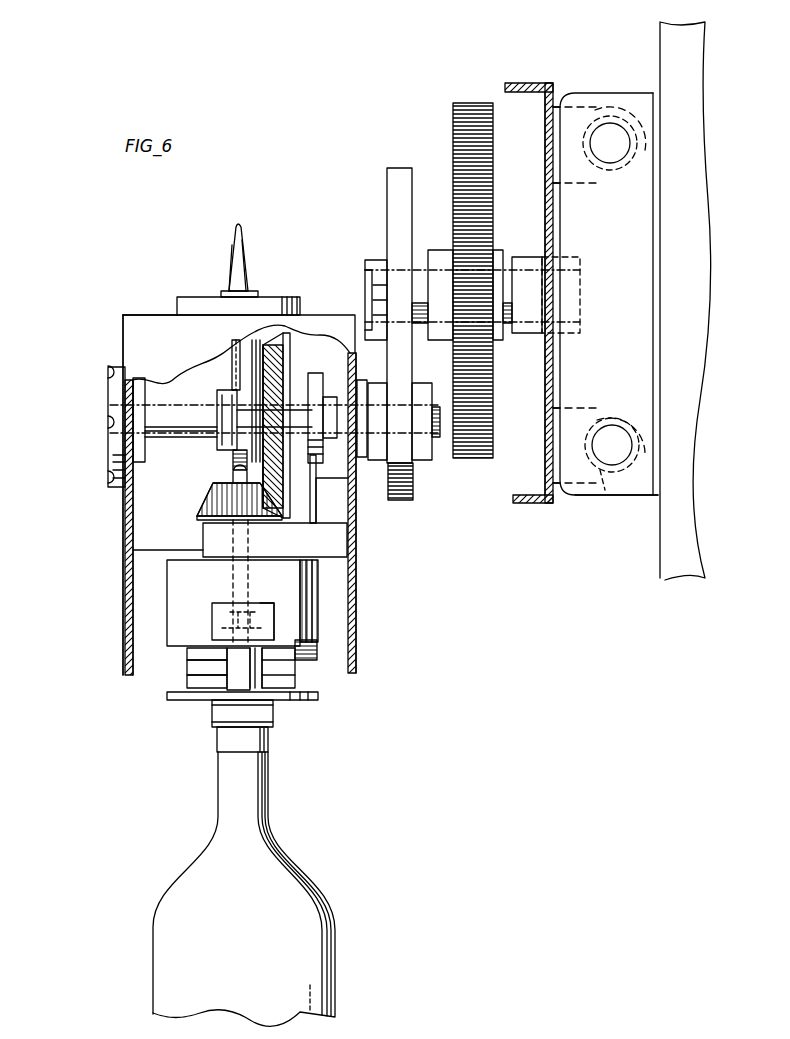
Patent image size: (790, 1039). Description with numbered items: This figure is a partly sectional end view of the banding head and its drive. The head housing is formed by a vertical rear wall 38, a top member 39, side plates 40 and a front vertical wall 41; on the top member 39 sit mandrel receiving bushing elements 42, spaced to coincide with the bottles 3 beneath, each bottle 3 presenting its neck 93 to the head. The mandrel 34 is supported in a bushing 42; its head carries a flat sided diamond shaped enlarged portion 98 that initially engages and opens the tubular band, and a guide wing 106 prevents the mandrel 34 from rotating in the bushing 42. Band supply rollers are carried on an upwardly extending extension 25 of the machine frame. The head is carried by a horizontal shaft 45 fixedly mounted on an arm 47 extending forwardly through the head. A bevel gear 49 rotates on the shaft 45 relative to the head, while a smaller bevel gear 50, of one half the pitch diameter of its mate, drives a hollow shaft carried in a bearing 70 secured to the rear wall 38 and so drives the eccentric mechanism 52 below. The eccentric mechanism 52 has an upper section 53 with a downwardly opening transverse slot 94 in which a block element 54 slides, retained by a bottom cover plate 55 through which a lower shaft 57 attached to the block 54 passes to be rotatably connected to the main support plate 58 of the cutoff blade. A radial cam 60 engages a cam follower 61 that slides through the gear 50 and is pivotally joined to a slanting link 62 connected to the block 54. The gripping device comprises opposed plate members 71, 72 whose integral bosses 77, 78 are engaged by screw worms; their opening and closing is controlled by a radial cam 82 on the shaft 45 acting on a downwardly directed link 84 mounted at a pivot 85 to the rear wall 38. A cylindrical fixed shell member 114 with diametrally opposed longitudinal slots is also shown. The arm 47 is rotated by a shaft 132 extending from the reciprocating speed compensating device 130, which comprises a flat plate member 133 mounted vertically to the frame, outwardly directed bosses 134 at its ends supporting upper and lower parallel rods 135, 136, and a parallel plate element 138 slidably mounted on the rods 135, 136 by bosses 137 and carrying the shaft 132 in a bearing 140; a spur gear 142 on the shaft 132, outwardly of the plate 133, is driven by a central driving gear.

The bottles 3 is at (338, 928).
The extension 25 is at (672, 43).
The mandrel 34 is at (250, 261).
The rear wall 38 is at (358, 626).
The top member 39 is at (160, 315).
The side plates 40 is at (180, 359).
The front vertical wall 41 is at (124, 548).
The mandrel receiving bushing elements 42 is at (195, 300).
The shaft 45 is at (200, 420).
The arm 47 is at (392, 232).
The bevel gear 49 is at (310, 358).
The smaller bevel gear 50 is at (212, 505).
The eccentric mechanism 52 is at (160, 607).
The upper section 53 is at (202, 591).
The block element 54 is at (214, 623).
The bottom cover plate 55 is at (300, 648).
The lower shaft 57 is at (262, 690).
The main support plate 58 is at (200, 700).
The radial cam 60 is at (217, 388).
The cam follower 61 is at (234, 472).
The link 62 is at (186, 655).
The bearing 70 is at (340, 545).
The plate member 71 is at (288, 684).
The plate member 72 is at (192, 677).
The boss 77 is at (287, 667).
The boss 78 is at (200, 664).
The radial cam 82 is at (334, 368).
The link 84 is at (318, 504).
The pivot 85 is at (348, 490).
The bottle neck 93 is at (235, 790).
The transverse slot 94 is at (265, 602).
The diamond shaped enlarged portion 98 is at (230, 265).
The guide wing 106 is at (238, 355).
The cylindrical fixed shell member 114 is at (216, 722).
The reciprocating speed compensating device 130 is at (550, 504).
The rotating shaft 132 is at (420, 275).
The flat plate member 133 is at (658, 497).
The bosses 134 is at (643, 97).
The upper rod 135 is at (617, 157).
The lower rod 136 is at (612, 432).
The bosses 137 is at (592, 96).
The plate element 138 is at (546, 166).
The bearing 140 is at (530, 262).
The spur gear 142 is at (472, 132).